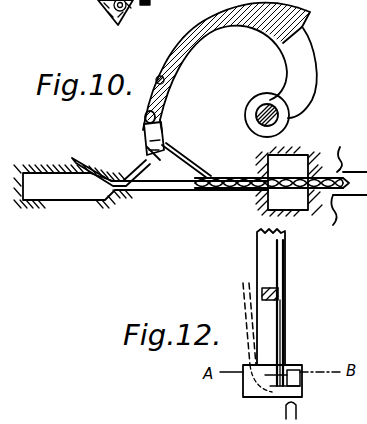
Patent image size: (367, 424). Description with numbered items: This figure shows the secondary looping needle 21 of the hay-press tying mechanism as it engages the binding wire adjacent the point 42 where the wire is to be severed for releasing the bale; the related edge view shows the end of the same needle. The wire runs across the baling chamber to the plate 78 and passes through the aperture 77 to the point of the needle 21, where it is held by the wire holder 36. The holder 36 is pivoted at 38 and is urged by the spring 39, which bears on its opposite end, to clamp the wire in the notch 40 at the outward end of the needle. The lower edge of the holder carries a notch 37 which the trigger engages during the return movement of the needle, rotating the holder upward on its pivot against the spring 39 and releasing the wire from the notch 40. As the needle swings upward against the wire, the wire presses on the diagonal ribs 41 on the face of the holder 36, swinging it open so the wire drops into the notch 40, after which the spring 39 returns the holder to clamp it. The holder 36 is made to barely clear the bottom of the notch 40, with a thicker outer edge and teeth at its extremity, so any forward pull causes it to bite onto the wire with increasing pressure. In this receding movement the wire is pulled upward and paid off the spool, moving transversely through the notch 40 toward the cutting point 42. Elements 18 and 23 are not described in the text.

In FIG. 12, the housing bracket 18 is at (243, 303).
In FIG. 10, the secondary looping needle 21 is at (185, 60).
In FIG. 12, the secondary looping needle 21 is at (273, 262).
In FIG. 10, the guide roller 23 is at (131, 8).
In FIG. 12, the wire holder 36 is at (286, 344).
In FIG. 10, the notch 37 is at (147, 147).
In FIG. 12, the notch 37 is at (366, 355).
In FIG. 12, the pivot 38 is at (283, 290).
In FIG. 10, the spring 39 is at (145, 97).
In FIG. 12, the spring 39 is at (366, 245).
In FIG. 10, the notch 40 is at (147, 162).
In FIG. 12, the notch 40 is at (300, 383).
In FIG. 10, the ribs 41 is at (163, 143).
In FIG. 10, the point 42 is at (182, 162).
In FIG. 10, the aperture 77 is at (80, 0).
In FIG. 10, the plate 78 is at (27, 0).